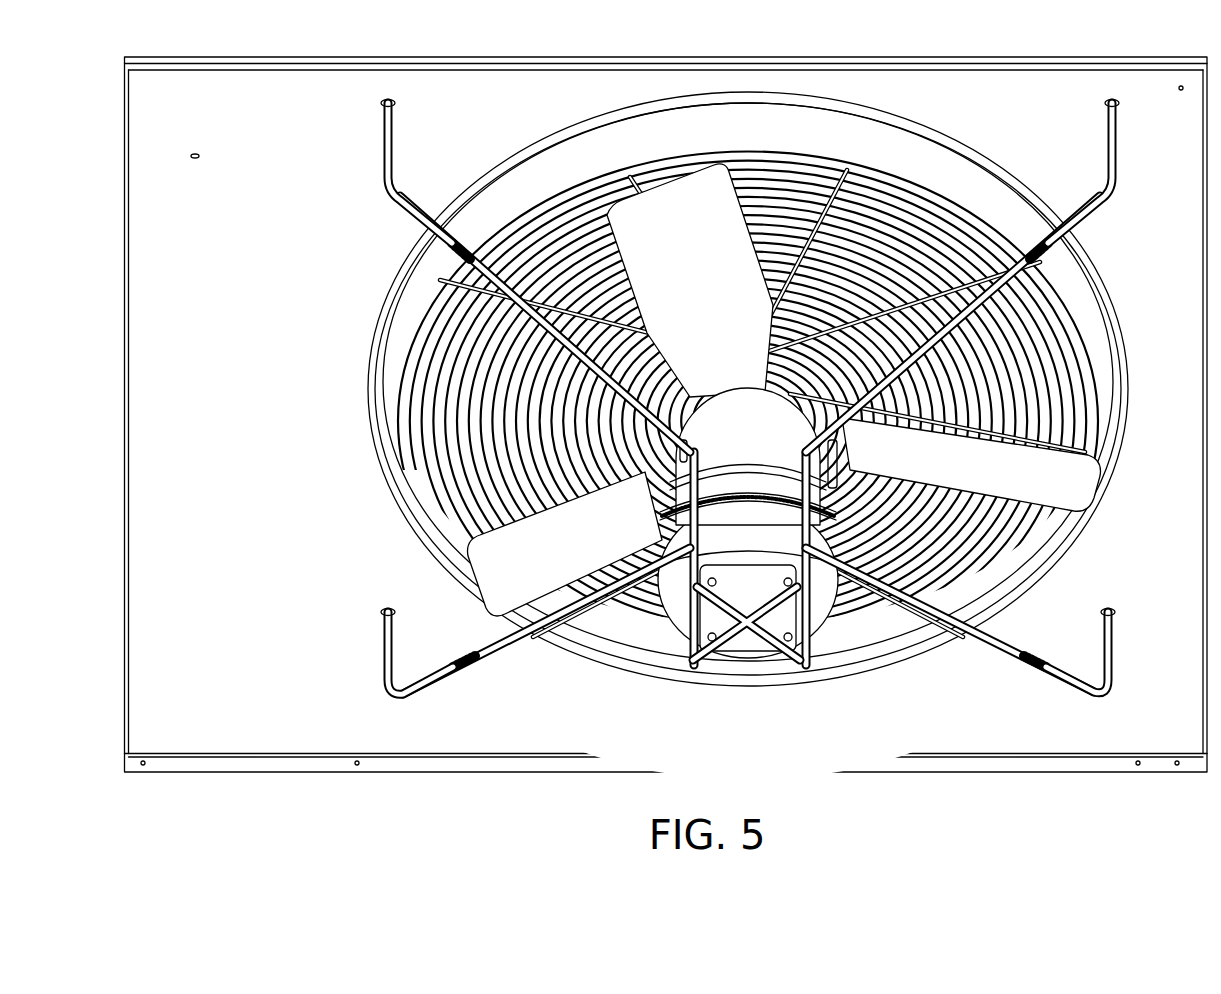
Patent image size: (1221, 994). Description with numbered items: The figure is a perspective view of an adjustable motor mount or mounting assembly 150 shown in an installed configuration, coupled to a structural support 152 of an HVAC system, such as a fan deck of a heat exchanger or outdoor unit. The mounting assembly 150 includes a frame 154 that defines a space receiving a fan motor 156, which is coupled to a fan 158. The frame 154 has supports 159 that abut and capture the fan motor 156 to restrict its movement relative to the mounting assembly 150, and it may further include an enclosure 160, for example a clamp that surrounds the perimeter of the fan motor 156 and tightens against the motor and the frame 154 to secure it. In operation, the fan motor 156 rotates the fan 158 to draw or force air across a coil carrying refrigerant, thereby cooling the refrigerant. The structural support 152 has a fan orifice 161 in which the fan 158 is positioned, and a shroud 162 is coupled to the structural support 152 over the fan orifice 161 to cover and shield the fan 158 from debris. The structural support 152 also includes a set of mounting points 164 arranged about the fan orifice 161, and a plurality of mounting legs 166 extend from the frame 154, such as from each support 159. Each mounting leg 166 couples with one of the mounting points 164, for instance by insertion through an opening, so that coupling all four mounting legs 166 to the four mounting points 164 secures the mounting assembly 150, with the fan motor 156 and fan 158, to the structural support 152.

The mounting assembly 150 is at (613, 632).
The structural support 152 is at (948, 88).
The frame 154 is at (822, 650).
The fan motor 156 is at (696, 620).
The fan 158 is at (480, 552).
The supports 159 is at (732, 390).
The enclosure 160 is at (774, 470).
The fan orifice 161 is at (515, 180).
The shroud 162 is at (1072, 345).
The mounting points 164 is at (386, 101).
The mounting legs 166 is at (385, 152).